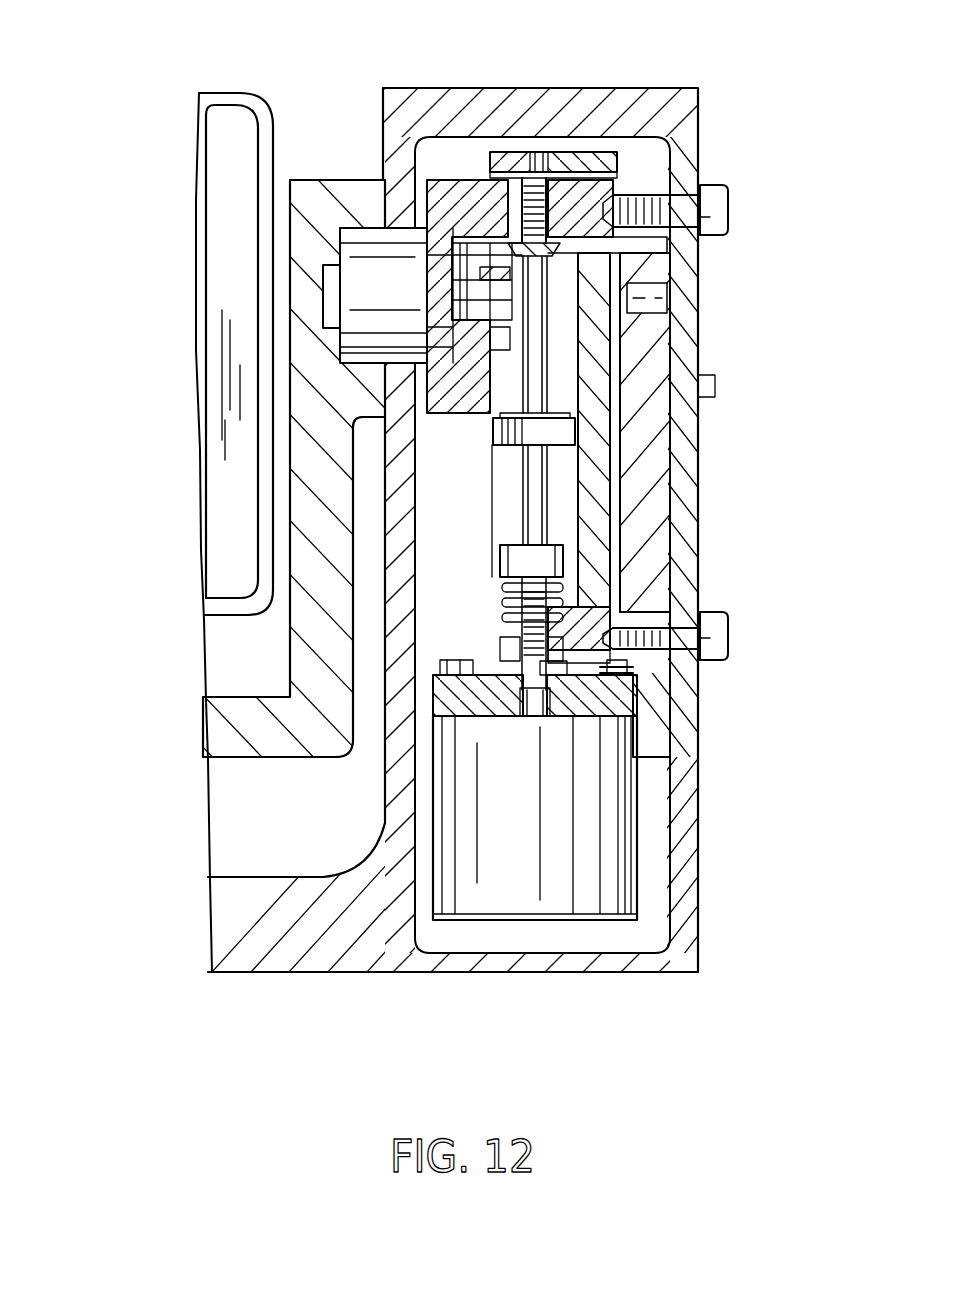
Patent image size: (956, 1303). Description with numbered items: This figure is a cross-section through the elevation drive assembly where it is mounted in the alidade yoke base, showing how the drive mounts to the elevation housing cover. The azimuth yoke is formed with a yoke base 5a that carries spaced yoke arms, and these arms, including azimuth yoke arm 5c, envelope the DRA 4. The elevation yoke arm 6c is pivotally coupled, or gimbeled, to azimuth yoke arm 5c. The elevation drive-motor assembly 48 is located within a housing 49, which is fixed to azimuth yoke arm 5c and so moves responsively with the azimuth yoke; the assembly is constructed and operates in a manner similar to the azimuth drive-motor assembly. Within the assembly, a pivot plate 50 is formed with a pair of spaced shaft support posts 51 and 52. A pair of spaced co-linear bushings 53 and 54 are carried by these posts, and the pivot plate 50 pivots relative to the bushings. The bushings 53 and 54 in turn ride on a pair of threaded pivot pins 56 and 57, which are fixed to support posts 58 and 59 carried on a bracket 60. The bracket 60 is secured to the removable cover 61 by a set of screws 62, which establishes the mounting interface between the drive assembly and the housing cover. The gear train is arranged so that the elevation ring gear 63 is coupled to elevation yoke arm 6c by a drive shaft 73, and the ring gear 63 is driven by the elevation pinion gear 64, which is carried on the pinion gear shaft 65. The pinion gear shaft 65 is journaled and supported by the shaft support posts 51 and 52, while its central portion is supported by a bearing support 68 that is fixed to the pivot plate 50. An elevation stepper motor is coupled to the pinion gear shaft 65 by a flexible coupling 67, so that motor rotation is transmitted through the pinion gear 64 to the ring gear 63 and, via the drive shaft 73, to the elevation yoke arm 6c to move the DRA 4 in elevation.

The DRA 4 is at (232, 128).
The elevation yoke arm 6c is at (332, 190).
The yoke base 5a is at (318, 957).
The azimuth yoke arm 5c is at (395, 770).
The elevation drive-motor assembly 48 is at (185, 525).
The housing 49 is at (565, 960).
The pivot plate 50 is at (597, 477).
The shaft support post 51 is at (563, 165).
The shaft support post 52 is at (590, 703).
The bushing 53 is at (520, 163).
The bushing 54 is at (512, 690).
The threaded pivot pin 56 is at (573, 187).
The threaded pivot pin 57 is at (500, 630).
The support post 58 is at (613, 200).
The support post 59 is at (637, 677).
The bracket 60 is at (653, 347).
The removable cover 61 is at (678, 858).
The screws 62 is at (713, 210).
The elevation ring gear 63 is at (453, 192).
The elevation pinion gear 64 is at (600, 242).
The pinion gear shaft 65 is at (533, 500).
The flexible coupling 67 is at (567, 590).
The bearing support 68 is at (565, 435).
The drive shaft 73 is at (327, 293).